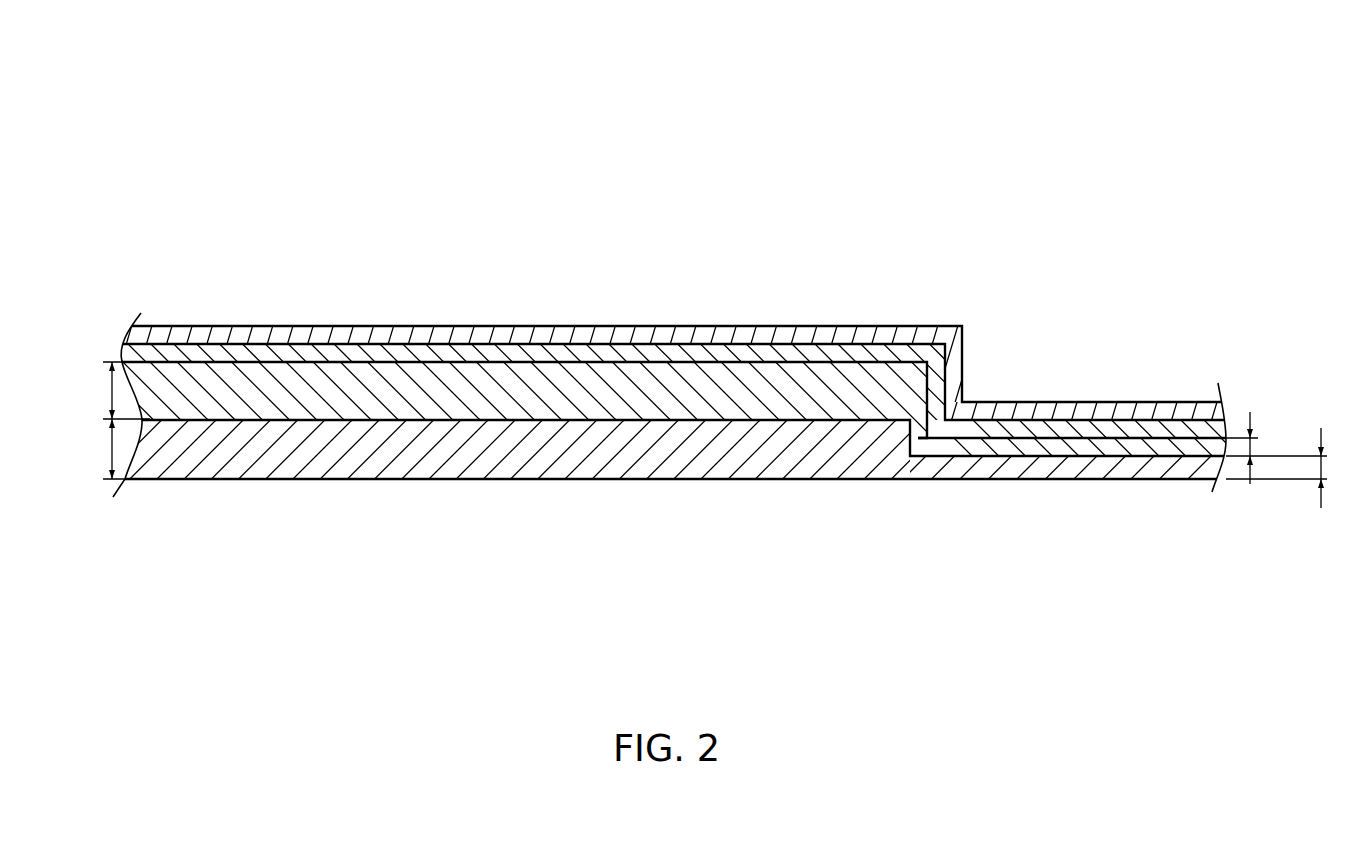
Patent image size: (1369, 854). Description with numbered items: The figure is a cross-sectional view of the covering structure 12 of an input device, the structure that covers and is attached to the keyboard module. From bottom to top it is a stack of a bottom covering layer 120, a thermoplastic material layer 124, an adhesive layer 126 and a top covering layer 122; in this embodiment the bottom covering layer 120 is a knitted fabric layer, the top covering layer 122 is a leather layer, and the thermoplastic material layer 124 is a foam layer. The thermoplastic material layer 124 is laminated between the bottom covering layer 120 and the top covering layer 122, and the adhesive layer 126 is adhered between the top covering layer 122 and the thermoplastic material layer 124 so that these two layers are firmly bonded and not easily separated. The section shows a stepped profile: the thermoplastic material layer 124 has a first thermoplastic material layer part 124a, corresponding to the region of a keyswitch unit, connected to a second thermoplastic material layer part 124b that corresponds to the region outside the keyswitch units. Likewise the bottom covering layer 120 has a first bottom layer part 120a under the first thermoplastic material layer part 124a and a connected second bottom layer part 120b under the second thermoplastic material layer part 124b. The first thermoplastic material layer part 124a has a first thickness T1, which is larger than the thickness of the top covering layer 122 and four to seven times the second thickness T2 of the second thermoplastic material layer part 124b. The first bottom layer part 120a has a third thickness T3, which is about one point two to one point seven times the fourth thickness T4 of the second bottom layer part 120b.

The covering structure 12 is at (210, 192).
The bottom covering layer 120 is at (725, 490).
The first bottom layer part 120a is at (800, 452).
The second bottom layer part 120b is at (1125, 463).
The top covering layer 122 is at (307, 326).
The thermoplastic material layer 124 is at (684, 332).
The first thermoplastic material layer part 124a is at (801, 388).
The second thermoplastic material layer part 124b is at (817, 212).
The adhesive layer 126 is at (426, 353).
The first thickness T1 is at (113, 390).
The second thickness T2 is at (1276, 448).
The third thickness T3 is at (113, 449).
The fourth thickness T4 is at (1293, 468).